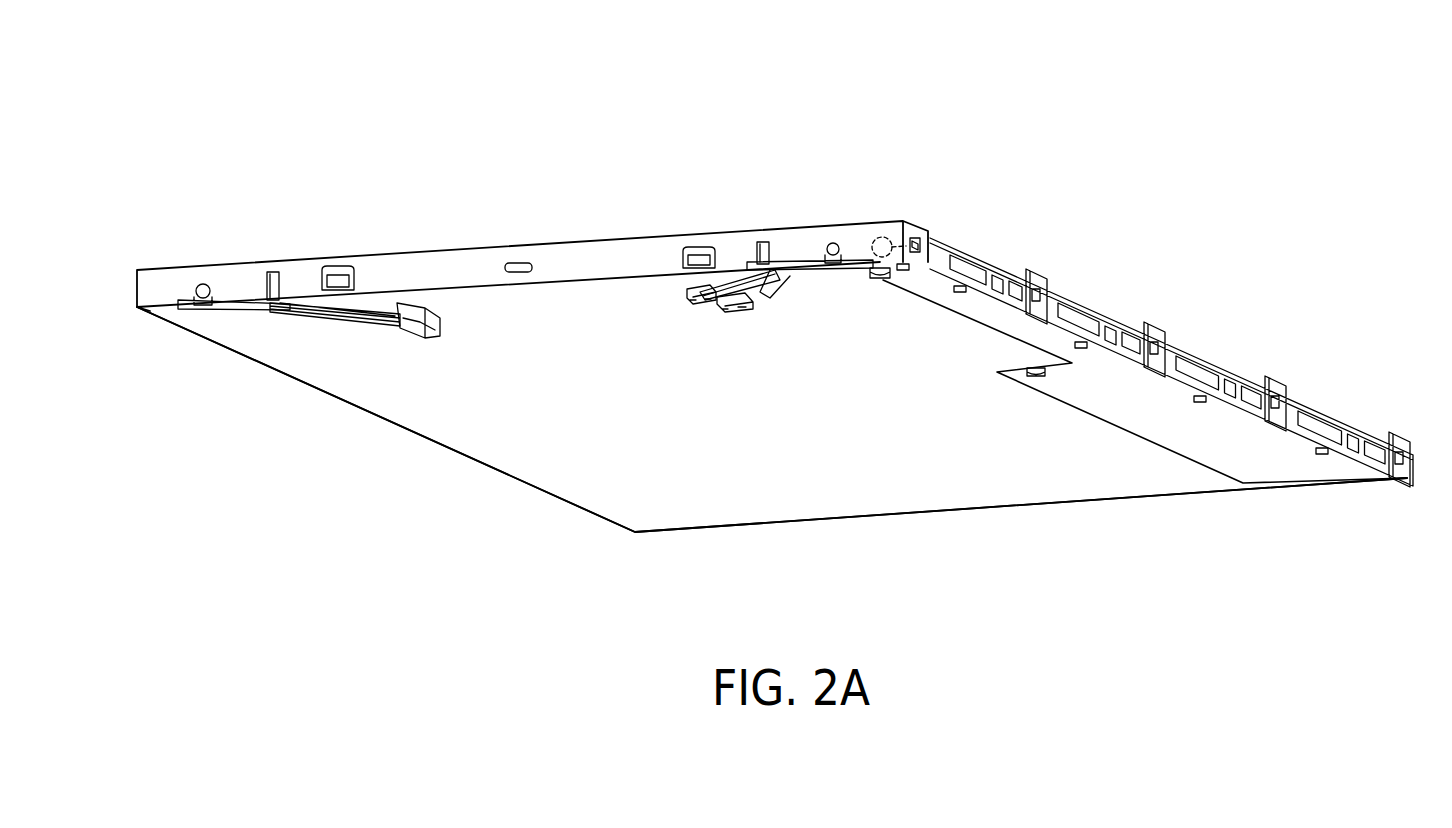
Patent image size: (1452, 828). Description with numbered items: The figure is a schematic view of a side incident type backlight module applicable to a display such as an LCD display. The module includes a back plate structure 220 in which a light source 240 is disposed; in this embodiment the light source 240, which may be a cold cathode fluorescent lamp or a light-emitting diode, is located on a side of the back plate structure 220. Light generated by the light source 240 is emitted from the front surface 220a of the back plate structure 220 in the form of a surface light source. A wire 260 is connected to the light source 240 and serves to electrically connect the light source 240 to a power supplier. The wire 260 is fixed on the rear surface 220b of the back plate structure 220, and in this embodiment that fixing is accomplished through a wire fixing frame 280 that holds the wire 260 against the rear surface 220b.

The back plate structure 220 is at (652, 300).
The front surface 220a is at (579, 193).
The rear surface 220b is at (730, 400).
The light source 240 is at (880, 235).
The wire 260 is at (737, 272).
The wire fixing frame 280 is at (785, 272).